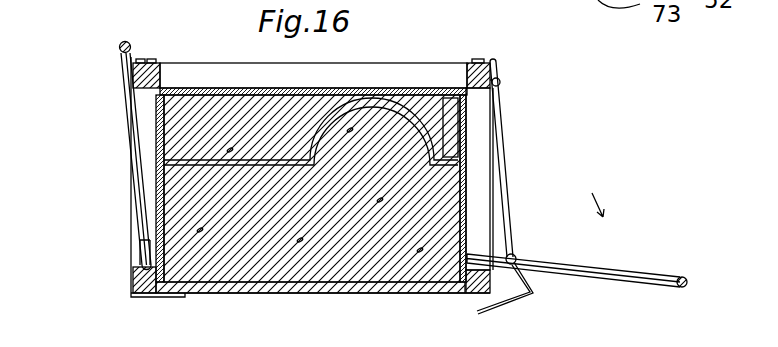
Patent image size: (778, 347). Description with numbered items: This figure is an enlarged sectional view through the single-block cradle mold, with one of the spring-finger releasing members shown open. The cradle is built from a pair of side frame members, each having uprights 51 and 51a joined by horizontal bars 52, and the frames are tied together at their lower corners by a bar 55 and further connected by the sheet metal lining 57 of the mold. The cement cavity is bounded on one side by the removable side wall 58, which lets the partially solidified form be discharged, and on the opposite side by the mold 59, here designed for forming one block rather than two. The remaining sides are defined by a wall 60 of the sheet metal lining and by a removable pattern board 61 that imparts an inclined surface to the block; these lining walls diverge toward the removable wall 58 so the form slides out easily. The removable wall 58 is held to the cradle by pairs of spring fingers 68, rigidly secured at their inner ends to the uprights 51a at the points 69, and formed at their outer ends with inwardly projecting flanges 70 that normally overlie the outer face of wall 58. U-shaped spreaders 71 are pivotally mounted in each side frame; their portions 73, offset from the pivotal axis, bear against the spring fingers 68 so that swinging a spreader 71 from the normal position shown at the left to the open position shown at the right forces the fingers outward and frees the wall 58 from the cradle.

The upright 51 is at (335, 187).
The upright 51a is at (148, 63).
The horizontal bar 52 is at (480, 168).
The bar 55 is at (403, 75).
The sheet metal lining 57 is at (242, 88).
The removable side wall 58 is at (312, 184).
The mold 59 is at (320, 97).
The wall of the sheet metal lining 60 is at (468, 198).
The removable pattern board 61 is at (207, 293).
The spring finger 68 is at (132, 270).
The rigid securing point 69 is at (121, 58).
The inwardly projecting flange 70 is at (170, 295).
The spreader 71 is at (135, 153).
The offset portion 73 is at (145, 223).